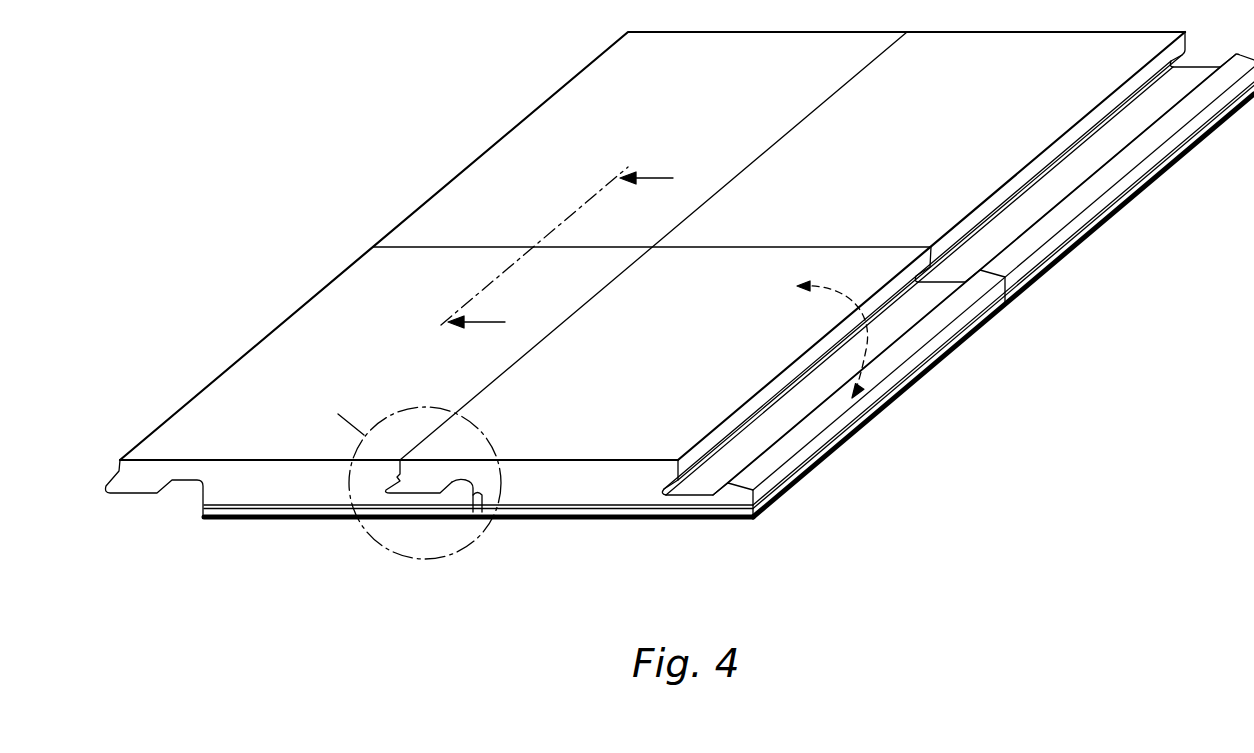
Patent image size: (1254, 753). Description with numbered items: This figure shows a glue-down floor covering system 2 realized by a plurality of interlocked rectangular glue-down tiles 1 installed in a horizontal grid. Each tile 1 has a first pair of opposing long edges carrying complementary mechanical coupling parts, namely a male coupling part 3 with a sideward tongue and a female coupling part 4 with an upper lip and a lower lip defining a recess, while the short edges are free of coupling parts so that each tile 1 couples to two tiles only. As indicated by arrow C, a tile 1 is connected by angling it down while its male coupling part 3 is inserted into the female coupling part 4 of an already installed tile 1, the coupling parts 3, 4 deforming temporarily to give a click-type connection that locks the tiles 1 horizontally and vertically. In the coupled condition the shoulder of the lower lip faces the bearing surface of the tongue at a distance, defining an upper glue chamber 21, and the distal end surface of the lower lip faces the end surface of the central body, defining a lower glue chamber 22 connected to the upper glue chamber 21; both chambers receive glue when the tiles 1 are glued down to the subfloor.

The glue-down tile 1 is at (692, 110).
The glue-down floor covering system 2 is at (368, 138).
The male coupling part 3 is at (138, 513).
The female coupling part 4 is at (690, 498).
The upper glue chamber 21 is at (468, 481).
The lower glue chamber 22 is at (488, 492).